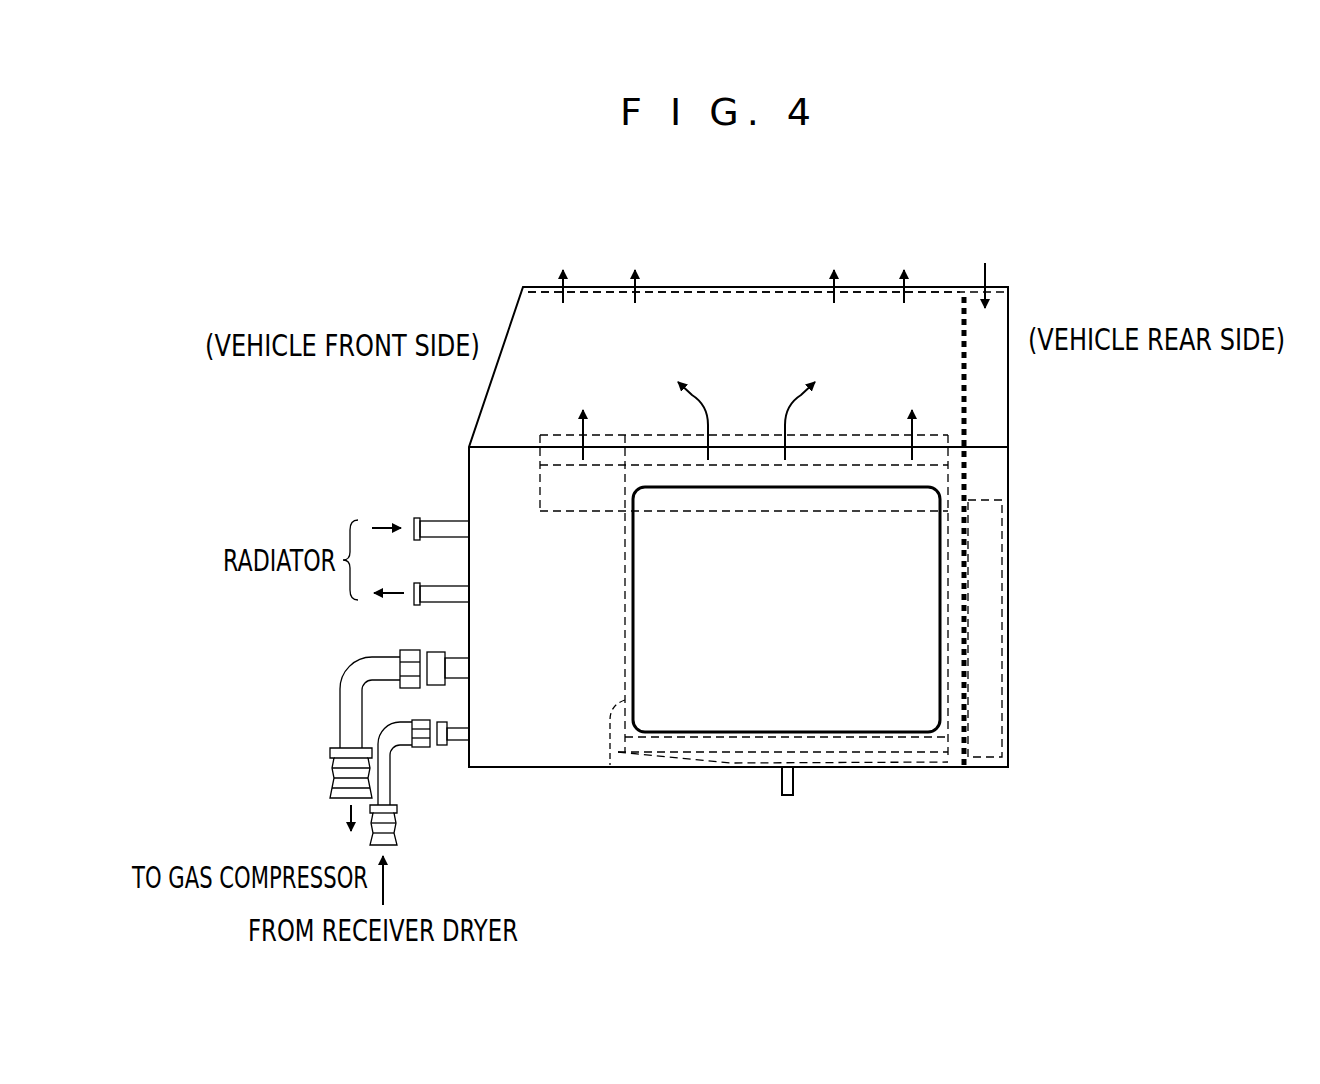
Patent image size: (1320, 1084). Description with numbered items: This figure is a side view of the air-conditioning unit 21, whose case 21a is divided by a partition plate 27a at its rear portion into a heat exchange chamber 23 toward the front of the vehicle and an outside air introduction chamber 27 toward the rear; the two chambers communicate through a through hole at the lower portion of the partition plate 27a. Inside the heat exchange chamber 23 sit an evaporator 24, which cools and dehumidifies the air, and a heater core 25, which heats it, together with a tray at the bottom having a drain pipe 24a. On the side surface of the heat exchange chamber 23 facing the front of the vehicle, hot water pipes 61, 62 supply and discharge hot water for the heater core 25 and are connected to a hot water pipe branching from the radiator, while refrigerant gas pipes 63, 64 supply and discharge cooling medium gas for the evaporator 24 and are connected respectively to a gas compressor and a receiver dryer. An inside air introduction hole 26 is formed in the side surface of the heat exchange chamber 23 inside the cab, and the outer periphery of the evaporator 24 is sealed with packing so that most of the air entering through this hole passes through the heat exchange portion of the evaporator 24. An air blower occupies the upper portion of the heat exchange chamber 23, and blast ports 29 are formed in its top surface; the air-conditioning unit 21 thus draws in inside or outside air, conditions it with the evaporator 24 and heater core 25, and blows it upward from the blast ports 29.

The air-conditioning unit 21 is at (722, 285).
The case 21a is at (690, 770).
The heat exchange chamber 23 is at (530, 757).
The evaporator 24 is at (610, 768).
The drain pipe 24a is at (782, 782).
The heater core 25 is at (893, 511).
The inside air introduction hole 26 is at (938, 670).
The outside air introduction chamber 27 is at (1003, 320).
The partition plate 27a is at (972, 333).
The blast port 29 is at (543, 286).
The hot water pipe 61 is at (440, 517).
The hot water pipe 62 is at (447, 582).
The refrigerant gas pipe 63 is at (375, 660).
The refrigerant gas pipe 64 is at (385, 786).